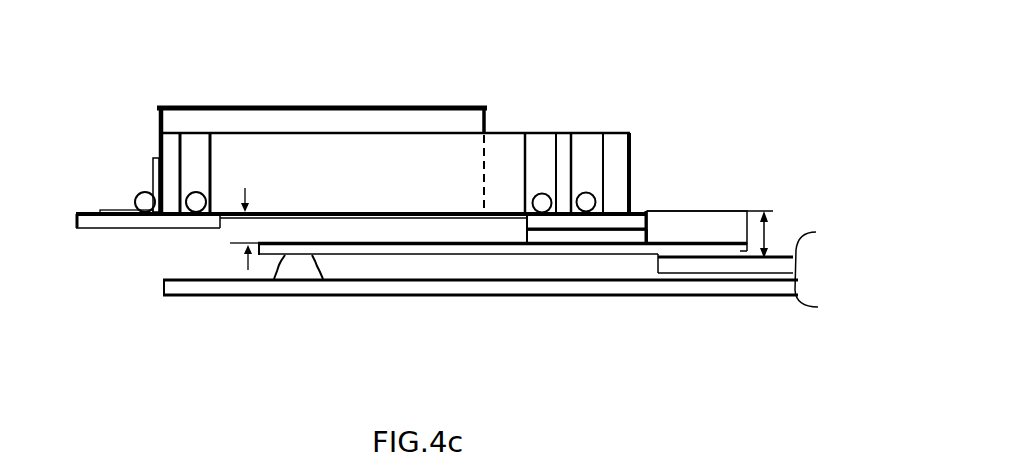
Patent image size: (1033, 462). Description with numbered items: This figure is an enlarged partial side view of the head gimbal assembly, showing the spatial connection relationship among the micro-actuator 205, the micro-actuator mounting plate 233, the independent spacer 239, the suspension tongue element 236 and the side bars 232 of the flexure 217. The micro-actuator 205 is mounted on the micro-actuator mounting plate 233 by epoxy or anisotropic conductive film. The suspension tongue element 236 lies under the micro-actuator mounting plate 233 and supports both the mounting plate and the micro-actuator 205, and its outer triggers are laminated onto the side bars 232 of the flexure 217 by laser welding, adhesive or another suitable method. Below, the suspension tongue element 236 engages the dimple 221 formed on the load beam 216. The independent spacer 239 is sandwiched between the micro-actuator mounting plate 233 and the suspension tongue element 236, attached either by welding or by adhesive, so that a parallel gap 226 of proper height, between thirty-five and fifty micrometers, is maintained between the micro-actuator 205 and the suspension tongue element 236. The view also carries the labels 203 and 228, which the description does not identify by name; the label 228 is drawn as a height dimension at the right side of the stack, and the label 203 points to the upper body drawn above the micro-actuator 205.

The optical housing 203 is at (257, 120).
The micro-actuator 205 is at (500, 155).
The micro-actuator mounting plate 233 is at (617, 221).
The independent spacer 239 is at (563, 229).
The parallel gap 226 is at (242, 228).
The suspension tongue element 236 is at (492, 243).
The side bars 232 is at (683, 260).
The height dimension 228 is at (766, 236).
The dimple 221 is at (292, 263).
The load beam 216 is at (440, 284).
The flexure 217 is at (783, 257).